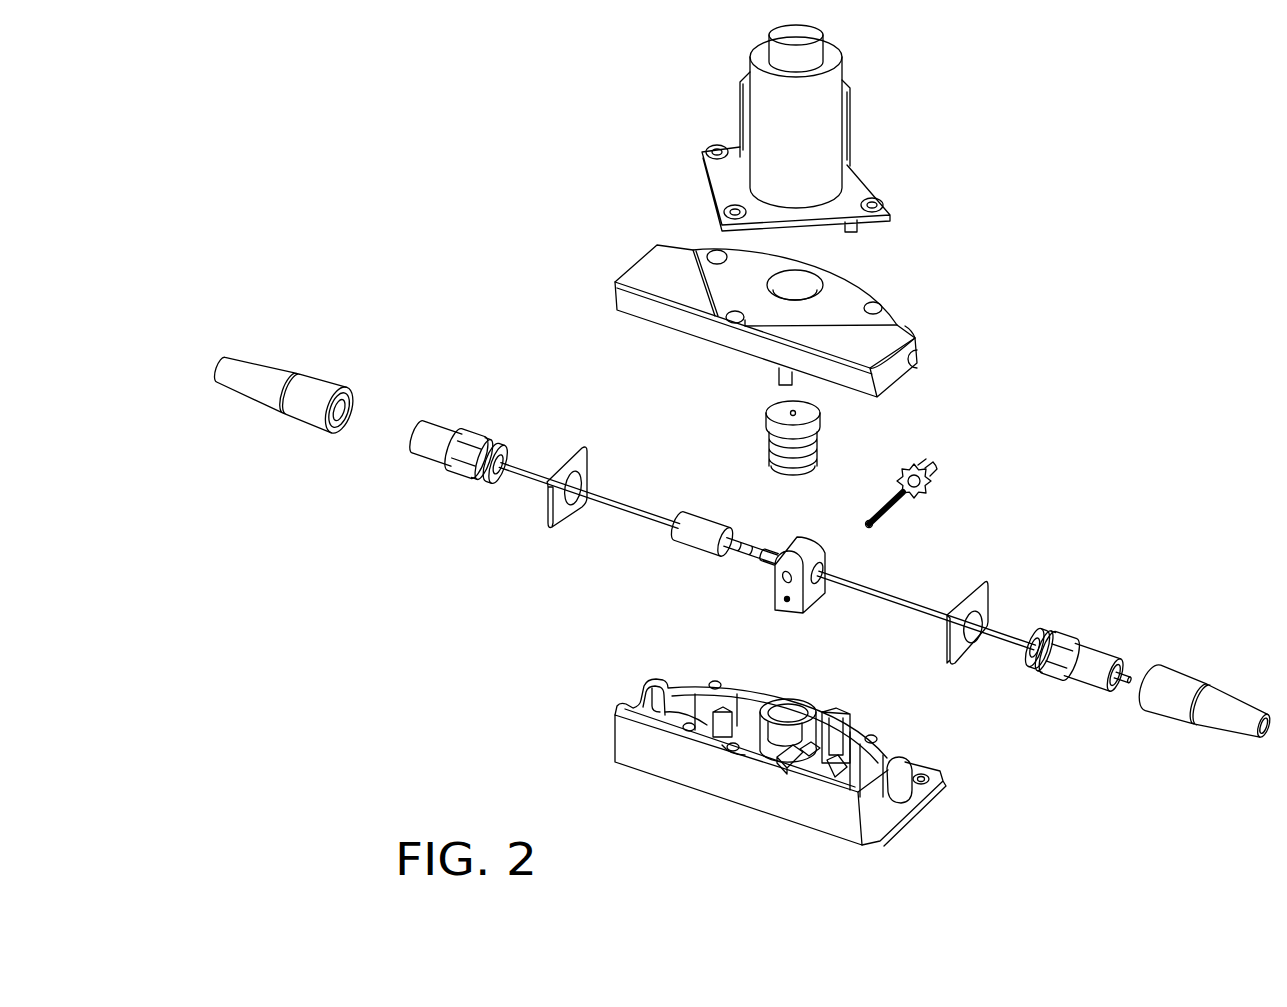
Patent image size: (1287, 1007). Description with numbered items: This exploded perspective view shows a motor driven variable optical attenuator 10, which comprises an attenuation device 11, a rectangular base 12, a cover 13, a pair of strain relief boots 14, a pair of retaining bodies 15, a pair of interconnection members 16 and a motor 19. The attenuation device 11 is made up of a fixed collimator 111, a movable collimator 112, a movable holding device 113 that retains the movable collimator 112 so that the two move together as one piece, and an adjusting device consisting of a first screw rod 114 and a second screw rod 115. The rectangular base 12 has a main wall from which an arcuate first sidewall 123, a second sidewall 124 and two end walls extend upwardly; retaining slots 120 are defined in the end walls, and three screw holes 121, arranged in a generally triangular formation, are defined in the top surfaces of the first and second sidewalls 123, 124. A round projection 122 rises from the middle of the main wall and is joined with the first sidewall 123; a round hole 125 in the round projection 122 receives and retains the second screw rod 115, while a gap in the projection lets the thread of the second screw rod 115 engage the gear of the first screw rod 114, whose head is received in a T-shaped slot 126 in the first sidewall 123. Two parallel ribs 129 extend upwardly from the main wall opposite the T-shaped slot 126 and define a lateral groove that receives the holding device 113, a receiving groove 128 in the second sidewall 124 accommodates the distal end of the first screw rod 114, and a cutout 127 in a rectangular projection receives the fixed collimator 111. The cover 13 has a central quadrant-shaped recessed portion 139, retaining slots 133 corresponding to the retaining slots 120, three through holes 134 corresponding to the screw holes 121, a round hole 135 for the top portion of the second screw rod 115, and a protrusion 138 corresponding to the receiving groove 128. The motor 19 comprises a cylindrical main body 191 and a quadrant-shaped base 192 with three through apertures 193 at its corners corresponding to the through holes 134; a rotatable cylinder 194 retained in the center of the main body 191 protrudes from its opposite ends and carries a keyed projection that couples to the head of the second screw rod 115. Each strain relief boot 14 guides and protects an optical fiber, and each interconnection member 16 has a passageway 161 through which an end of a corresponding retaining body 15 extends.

The motor driven variable optical attenuator 10 is at (1223, 95).
The attenuation device 11 is at (688, 548).
The fixed collimator 111 is at (701, 531).
The movable collimator 112 is at (759, 548).
The movable holding device 113 is at (813, 598).
The first screw rod 114 is at (950, 491).
The second screw rod 115 is at (832, 445).
The rectangular base 12 is at (588, 717).
The retaining slots 120 is at (632, 690).
The screw holes 121 is at (712, 682).
The round projection 122 is at (722, 708).
The arcuate first sidewall 123 is at (900, 758).
The second sidewall 124 is at (861, 843).
The round hole 125 is at (790, 706).
The T-shaped slot 126 is at (838, 708).
The cutout 127 is at (665, 717).
The receiving groove 128 is at (788, 764).
The parallel ribs 129 is at (833, 772).
The cover 13 is at (612, 254).
The retaining slots 133 is at (905, 370).
The through holes 134 is at (716, 251).
The round hole 135 is at (797, 292).
The protrusion 138 is at (792, 383).
The quadrant-shaped recessed portion 139 is at (856, 293).
The strain relief boots 14 is at (263, 350).
The retaining bodies 15 is at (463, 418).
The interconnection members 16 is at (810, 519).
The passageway 161 is at (578, 488).
The motor 19 is at (676, 140).
The cylindrical main body 191 is at (822, 95).
The quadrant-shaped base 192 is at (853, 187).
The through apertures 193 is at (717, 145).
The rotatable cylinder 194 is at (770, 47).